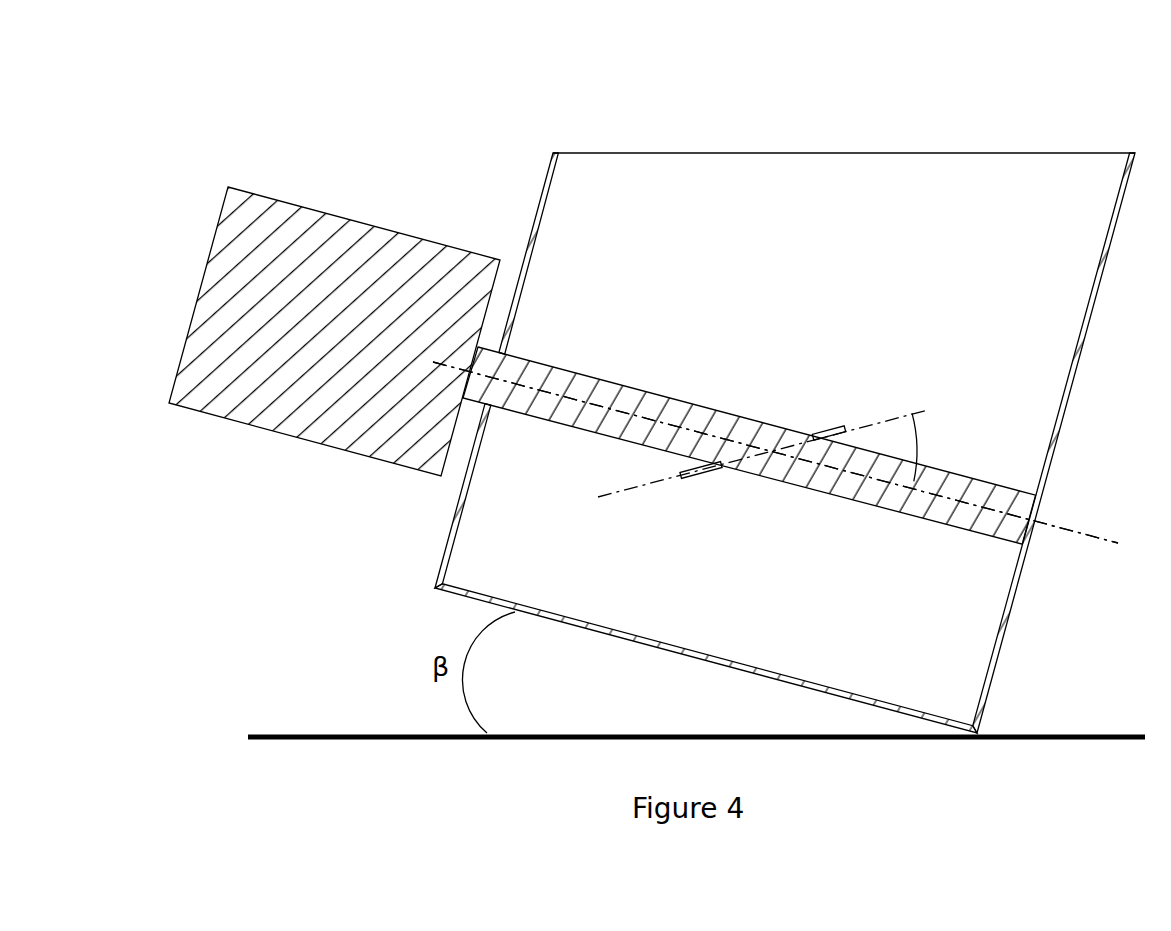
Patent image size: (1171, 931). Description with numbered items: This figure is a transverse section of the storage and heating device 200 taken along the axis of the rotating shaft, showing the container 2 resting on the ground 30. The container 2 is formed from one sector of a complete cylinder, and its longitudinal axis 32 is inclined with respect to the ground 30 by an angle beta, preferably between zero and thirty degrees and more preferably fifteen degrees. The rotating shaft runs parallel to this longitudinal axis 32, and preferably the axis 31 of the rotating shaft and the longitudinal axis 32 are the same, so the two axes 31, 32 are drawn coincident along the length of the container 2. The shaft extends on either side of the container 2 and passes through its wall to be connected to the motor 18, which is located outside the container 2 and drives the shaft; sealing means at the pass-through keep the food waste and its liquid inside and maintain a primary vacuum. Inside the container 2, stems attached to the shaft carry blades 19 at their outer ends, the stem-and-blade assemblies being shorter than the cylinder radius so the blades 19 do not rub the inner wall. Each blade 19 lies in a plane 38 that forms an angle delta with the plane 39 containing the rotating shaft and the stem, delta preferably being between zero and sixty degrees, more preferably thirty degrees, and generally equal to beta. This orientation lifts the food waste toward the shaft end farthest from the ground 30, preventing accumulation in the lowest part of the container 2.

The container 2 is at (447, 537).
The motor 18 is at (302, 285).
The blade 19 is at (832, 428).
The ground 30 is at (343, 738).
The axis of the rotating shaft 31 is at (1083, 535).
The longitudinal axis 32 is at (775, 452).
The plane 38 is at (877, 427).
The plane 39 is at (1048, 532).
The storage and heating device 200 is at (663, 391).